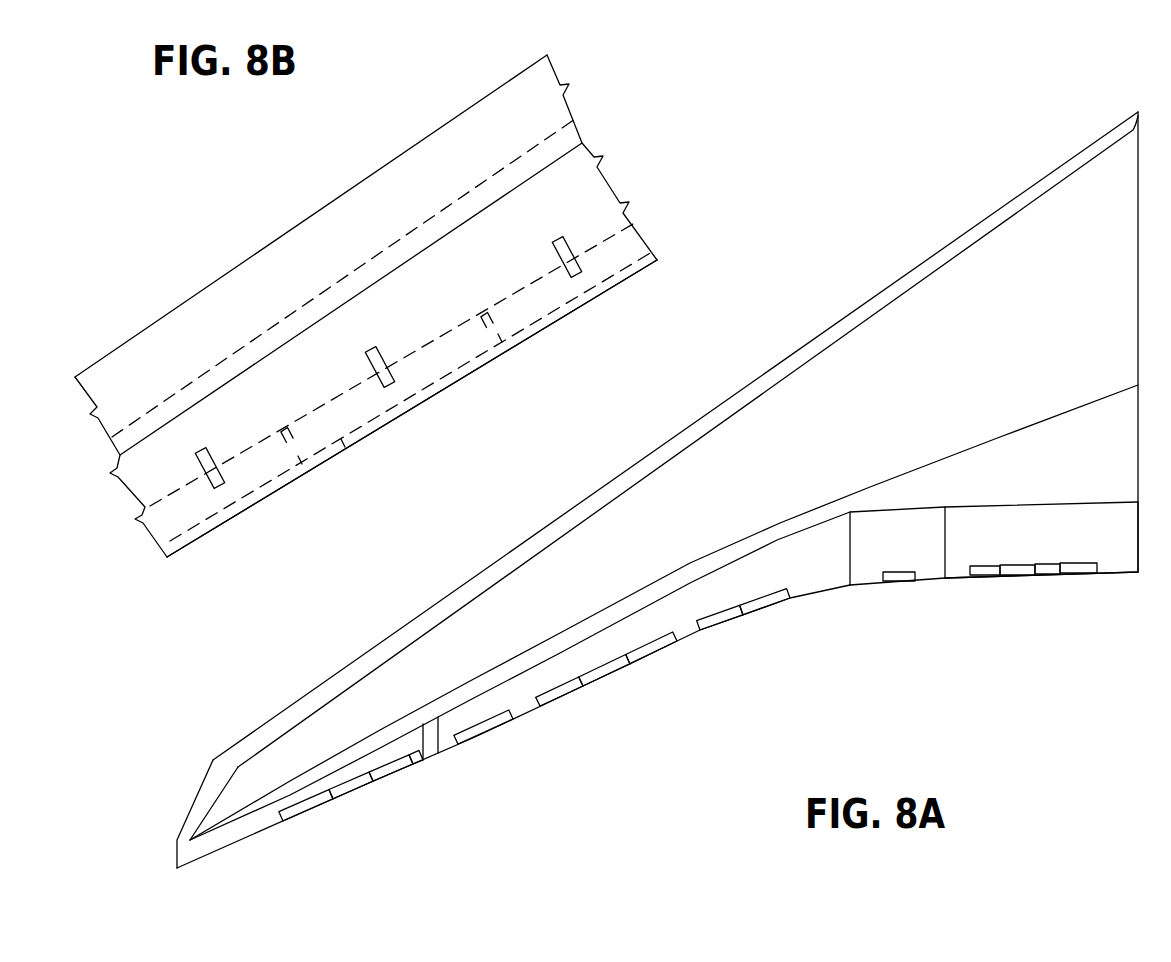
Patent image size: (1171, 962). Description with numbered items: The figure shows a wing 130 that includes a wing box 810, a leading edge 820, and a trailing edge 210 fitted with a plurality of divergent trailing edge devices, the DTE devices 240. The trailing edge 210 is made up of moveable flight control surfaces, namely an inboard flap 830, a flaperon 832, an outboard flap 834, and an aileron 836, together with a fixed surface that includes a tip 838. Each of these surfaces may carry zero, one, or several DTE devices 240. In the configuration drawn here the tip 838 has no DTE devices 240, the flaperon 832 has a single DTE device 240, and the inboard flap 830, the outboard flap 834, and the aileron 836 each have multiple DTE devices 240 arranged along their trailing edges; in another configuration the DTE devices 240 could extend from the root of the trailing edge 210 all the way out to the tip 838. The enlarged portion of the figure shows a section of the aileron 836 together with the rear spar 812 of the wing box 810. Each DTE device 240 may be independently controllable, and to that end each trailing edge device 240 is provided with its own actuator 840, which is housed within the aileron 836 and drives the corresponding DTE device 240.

In FIG. 8A, the wing 130 is at (998, 722).
In FIG. 8A, the trailing edge 210 is at (513, 734).
In FIG. 8B, the DTE device 240 is at (411, 402).
In FIG. 8A, the DTE device 240 is at (898, 585).
In FIG. 8B, the wing box 810 is at (366, 297).
In FIG. 8A, the wing box 810 is at (1005, 373).
In FIG. 8B, the rear spar 812 is at (347, 286).
In FIG. 8A, the leading edge 820 is at (675, 439).
In FIG. 8A, the inboard flap 830 is at (1118, 577).
In FIG. 8A, the flaperon 832 is at (873, 583).
In FIG. 8A, the outboard flap 834 is at (683, 647).
In FIG. 8B, the aileron 836 is at (440, 408).
In FIG. 8A, the aileron 836 is at (277, 803).
In FIG. 8A, the tip 838 is at (178, 822).
In FIG. 8B, the actuator 840 is at (206, 448).